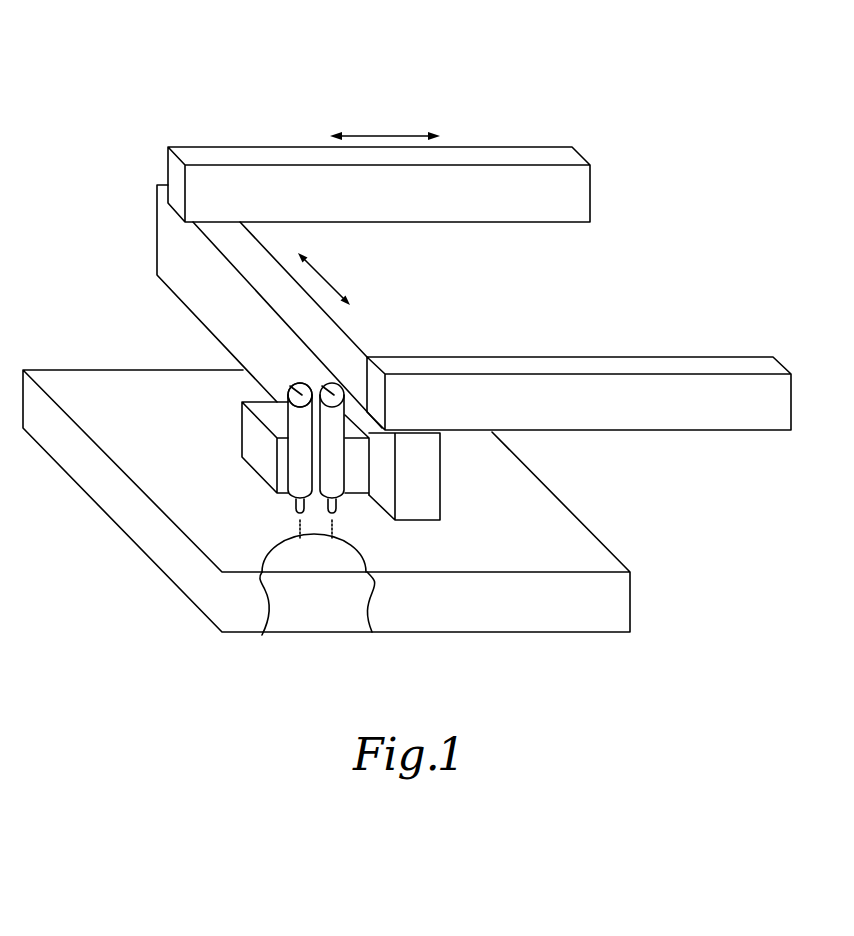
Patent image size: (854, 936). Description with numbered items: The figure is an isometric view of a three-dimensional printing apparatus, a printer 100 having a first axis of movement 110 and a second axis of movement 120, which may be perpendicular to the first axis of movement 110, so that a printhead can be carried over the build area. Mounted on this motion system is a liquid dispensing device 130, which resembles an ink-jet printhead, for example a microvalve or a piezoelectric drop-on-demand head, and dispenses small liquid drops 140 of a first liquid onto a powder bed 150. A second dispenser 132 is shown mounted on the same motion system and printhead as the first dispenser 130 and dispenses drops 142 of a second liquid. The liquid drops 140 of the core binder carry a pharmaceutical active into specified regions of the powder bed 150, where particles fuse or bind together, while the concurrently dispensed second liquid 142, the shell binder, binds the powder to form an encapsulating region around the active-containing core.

The printer 100 is at (158, 58).
The first axis of movement 110 is at (540, 155).
The second axis of movement 120 is at (338, 345).
The liquid dispensing device 130 is at (297, 385).
The second dispenser 132 is at (288, 392).
The drops of first liquid 140 is at (372, 632).
The drops of second liquid 142 is at (262, 635).
The powder bed 150 is at (124, 470).